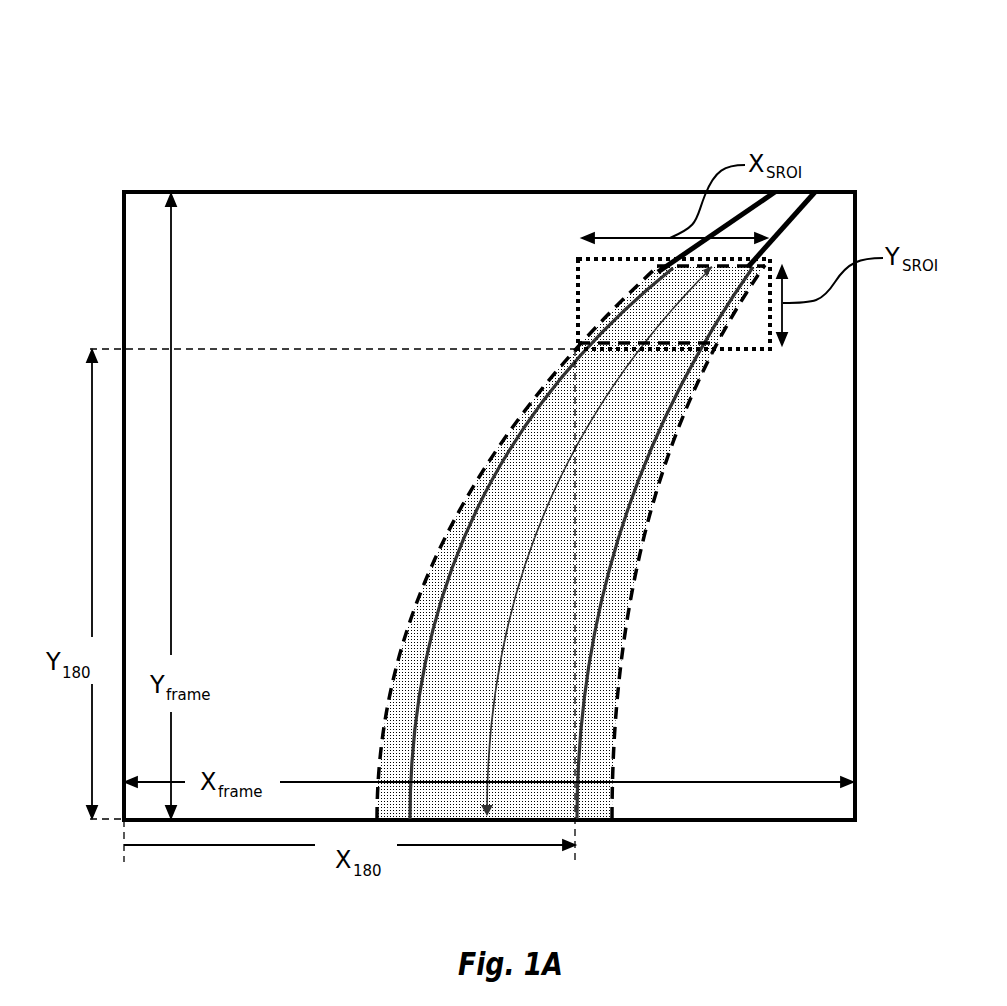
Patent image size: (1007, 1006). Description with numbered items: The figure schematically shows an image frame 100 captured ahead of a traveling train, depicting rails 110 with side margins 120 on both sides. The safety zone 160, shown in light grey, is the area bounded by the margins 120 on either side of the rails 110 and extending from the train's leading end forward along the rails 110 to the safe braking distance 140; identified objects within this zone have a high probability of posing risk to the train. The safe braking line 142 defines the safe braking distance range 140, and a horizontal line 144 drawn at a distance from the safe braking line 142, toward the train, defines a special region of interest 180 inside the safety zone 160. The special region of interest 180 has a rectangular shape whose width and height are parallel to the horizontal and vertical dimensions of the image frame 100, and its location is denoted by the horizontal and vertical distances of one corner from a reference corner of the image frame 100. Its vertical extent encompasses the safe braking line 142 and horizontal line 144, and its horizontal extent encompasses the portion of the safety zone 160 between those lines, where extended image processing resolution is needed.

The image frame 100 is at (75, 48).
The rails 110 is at (593, 600).
The side margins 120 is at (475, 483).
The safe braking distance range 140 is at (492, 703).
The safe braking line 142 is at (690, 268).
The horizontal line 144 is at (677, 344).
The safety zone 160 is at (517, 442).
The special region of interest (SROI) 180 is at (578, 285).